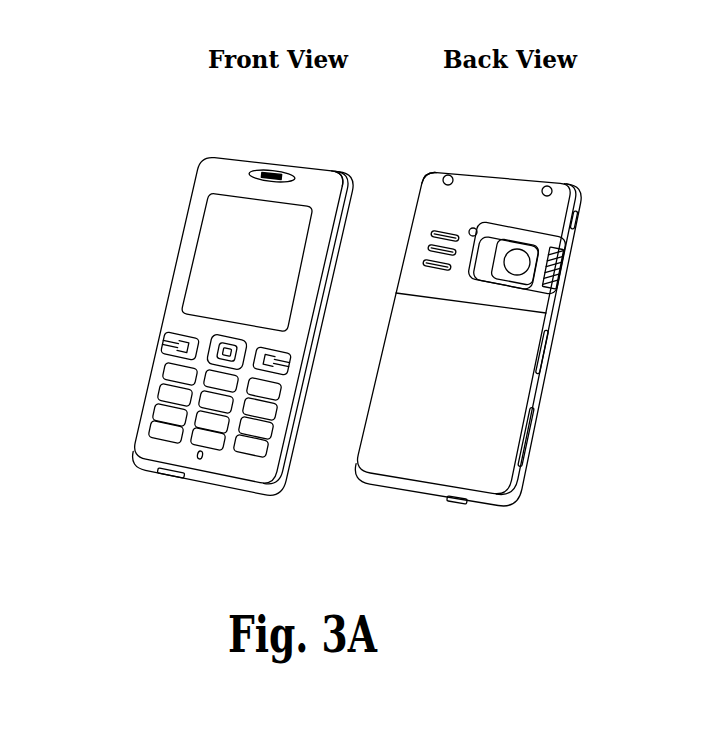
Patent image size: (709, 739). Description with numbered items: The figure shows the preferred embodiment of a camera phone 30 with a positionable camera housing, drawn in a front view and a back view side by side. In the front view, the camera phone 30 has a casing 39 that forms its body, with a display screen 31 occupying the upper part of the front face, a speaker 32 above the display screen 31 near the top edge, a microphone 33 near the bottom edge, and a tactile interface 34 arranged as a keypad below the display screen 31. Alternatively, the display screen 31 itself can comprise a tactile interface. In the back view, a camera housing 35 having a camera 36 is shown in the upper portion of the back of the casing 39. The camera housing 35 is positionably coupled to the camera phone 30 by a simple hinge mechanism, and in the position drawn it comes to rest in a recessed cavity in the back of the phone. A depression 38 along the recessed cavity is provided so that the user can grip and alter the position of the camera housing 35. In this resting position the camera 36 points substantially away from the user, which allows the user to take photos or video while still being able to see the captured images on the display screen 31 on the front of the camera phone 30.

The camera phone 30 is at (150, 153).
The display screen 31 is at (216, 258).
The speaker 32 is at (274, 174).
The microphone 33 is at (200, 460).
The tactile interface 34 is at (265, 427).
The camera housing 35 is at (540, 284).
The camera 36 is at (520, 262).
The depression 38 is at (484, 262).
The casing 39 is at (344, 184).